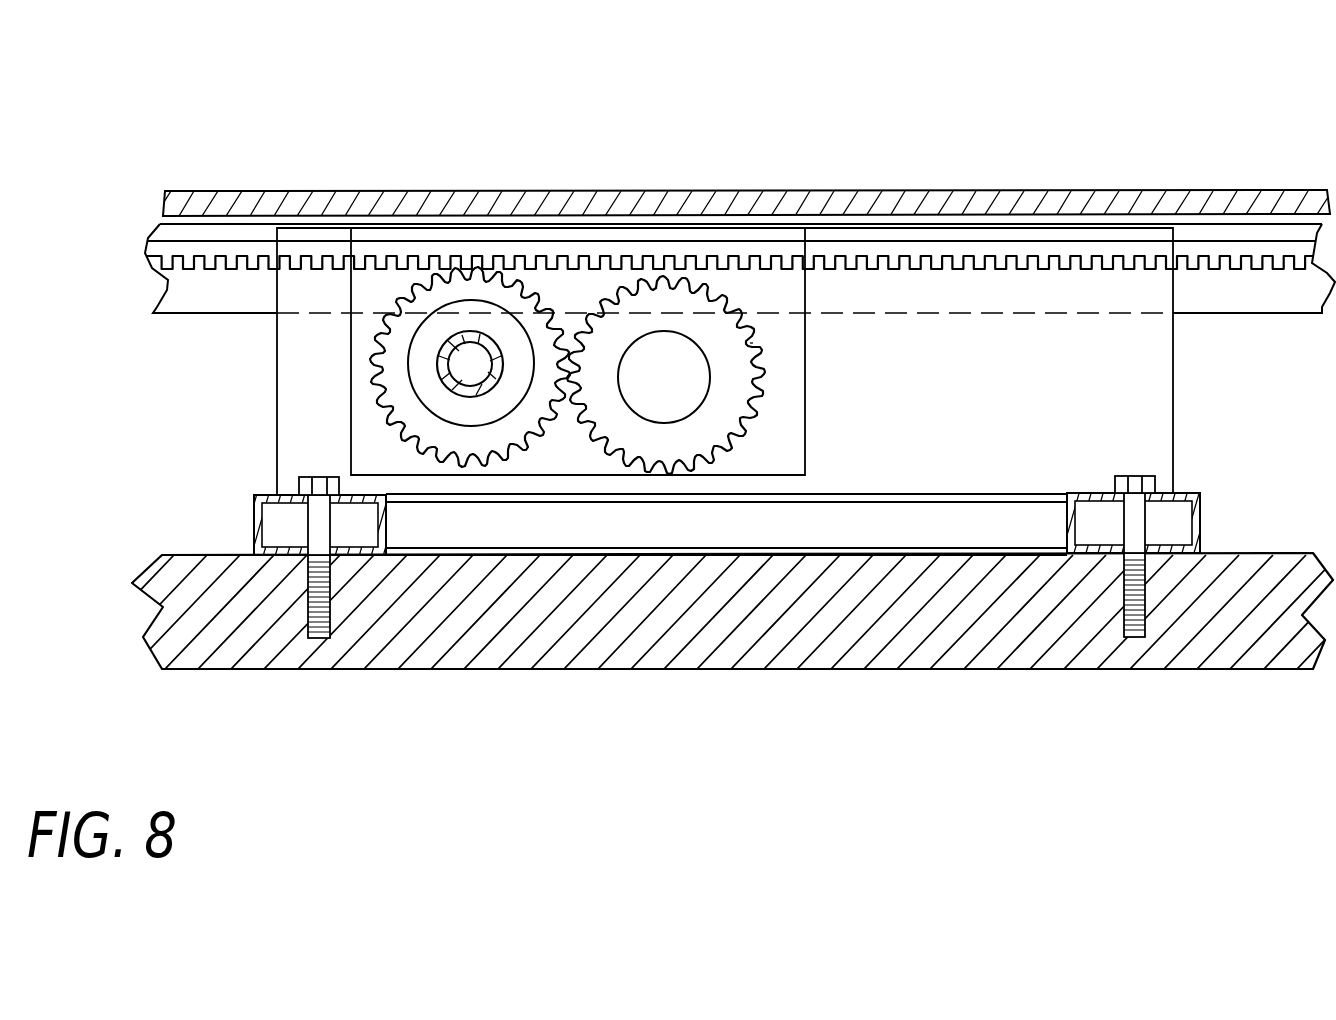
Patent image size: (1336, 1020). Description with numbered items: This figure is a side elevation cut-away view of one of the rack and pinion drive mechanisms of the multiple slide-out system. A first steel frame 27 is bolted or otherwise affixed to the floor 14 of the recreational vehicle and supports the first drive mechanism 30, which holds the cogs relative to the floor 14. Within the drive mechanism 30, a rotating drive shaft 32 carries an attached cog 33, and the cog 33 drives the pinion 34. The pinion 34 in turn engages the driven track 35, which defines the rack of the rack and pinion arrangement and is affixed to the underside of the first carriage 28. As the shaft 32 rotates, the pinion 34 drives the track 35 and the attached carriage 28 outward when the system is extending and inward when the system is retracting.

The floor 14 is at (208, 553).
The first steel frame 27 is at (253, 512).
The first carriage 28 is at (893, 190).
The first drive mechanism 30 is at (322, 331).
The rotating drive shaft 32 is at (690, 390).
The cog 33 is at (750, 343).
The pinion 34 is at (377, 403).
The track 35 is at (1228, 248).